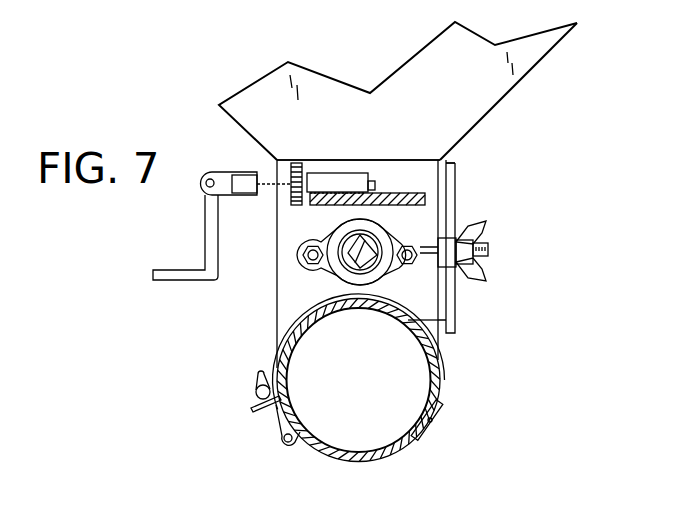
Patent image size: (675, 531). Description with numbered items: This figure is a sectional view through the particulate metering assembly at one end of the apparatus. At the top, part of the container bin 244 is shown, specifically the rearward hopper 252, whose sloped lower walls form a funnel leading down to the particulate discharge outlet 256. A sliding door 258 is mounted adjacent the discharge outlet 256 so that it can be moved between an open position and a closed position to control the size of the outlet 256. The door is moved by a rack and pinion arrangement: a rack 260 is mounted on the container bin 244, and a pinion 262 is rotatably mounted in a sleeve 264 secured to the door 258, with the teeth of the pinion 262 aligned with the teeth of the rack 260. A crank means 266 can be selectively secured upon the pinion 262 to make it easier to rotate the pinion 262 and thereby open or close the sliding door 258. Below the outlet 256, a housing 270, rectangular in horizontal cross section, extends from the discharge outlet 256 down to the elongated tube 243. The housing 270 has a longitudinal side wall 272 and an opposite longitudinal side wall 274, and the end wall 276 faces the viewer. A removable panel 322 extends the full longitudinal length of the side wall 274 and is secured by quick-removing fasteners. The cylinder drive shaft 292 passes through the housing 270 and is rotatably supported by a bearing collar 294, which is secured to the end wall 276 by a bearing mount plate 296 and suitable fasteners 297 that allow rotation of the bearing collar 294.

The elongated tube 243 is at (440, 386).
The container bin 244 is at (498, 112).
The rearward hopper 252 is at (472, 85).
The particulate discharge outlet 256 is at (402, 158).
The sliding door 258 is at (411, 193).
The rack 260 is at (299, 163).
The pinion 262 is at (280, 176).
The sleeve 264 is at (333, 173).
The crank means 266 is at (205, 229).
The housing 270 is at (272, 331).
The longitudinal side wall 272 is at (277, 312).
The longitudinal side wall 274 is at (462, 303).
The end wall 276 is at (320, 300).
The cylinder drive shaft 292 is at (346, 238).
The bearing collar 294 is at (386, 226).
The bearing mount plate 296 is at (400, 240).
The fasteners 297 is at (310, 257).
The removable panel 322 is at (456, 178).